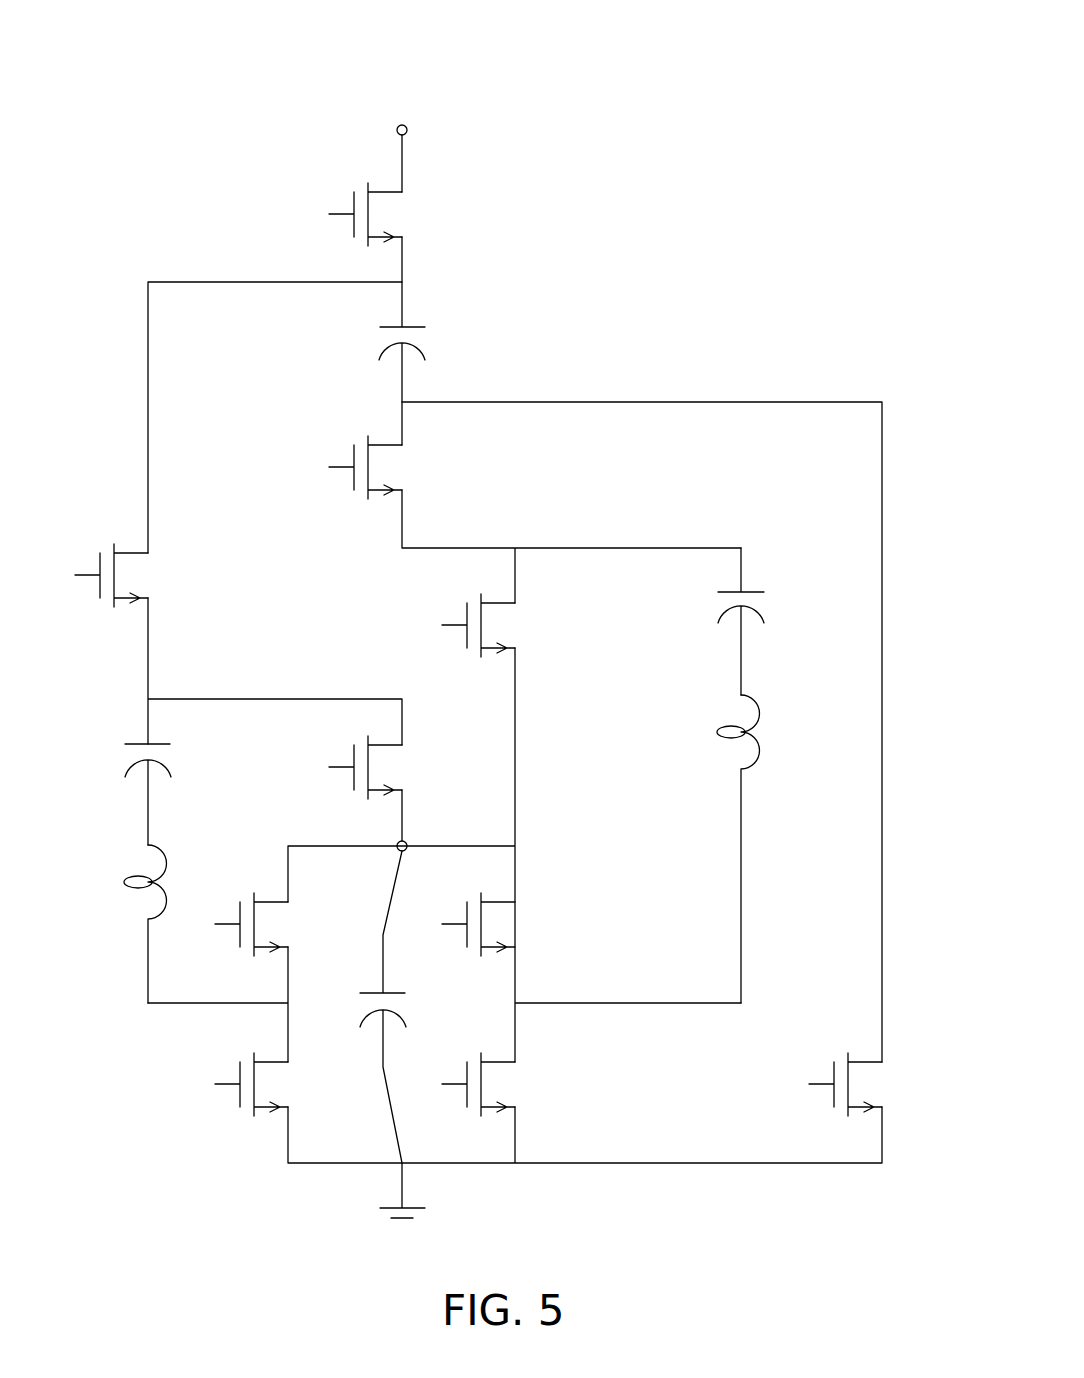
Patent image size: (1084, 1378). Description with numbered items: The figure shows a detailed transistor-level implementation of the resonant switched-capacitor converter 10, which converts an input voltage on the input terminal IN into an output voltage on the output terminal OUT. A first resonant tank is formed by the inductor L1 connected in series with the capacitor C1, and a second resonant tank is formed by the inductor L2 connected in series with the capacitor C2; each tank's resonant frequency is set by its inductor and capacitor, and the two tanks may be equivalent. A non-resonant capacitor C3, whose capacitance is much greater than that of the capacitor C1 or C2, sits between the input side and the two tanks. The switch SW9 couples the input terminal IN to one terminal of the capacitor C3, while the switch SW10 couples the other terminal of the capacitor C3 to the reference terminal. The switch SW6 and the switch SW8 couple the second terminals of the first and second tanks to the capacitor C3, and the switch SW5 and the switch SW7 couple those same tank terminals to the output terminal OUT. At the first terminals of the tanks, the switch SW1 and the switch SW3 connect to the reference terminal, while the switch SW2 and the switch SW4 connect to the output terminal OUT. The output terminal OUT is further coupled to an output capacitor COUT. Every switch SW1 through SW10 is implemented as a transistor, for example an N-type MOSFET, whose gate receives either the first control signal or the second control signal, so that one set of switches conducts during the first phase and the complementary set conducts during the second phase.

The resonant switched-capacitor converter 10 is at (792, 68).
The input terminal IN is at (406, 126).
The output terminal OUT is at (398, 851).
The switch SW1 is at (267, 1084).
The switch SW2 is at (267, 924).
The switch SW3 is at (494, 1084).
The switch SW4 is at (494, 924).
The switch SW5 is at (381, 767).
The switch SW6 is at (127, 575).
The switch SW7 is at (494, 625).
The switch SW8 is at (381, 467).
The switch SW9 is at (381, 214).
The switch SW10 is at (869, 1084).
The capacitor C1 is at (129, 794).
The capacitor C2 is at (723, 621).
The capacitor C3 is at (422, 341).
The output capacitor COUT is at (421, 1007).
The inductor L1 is at (127, 924).
The inductor L2 is at (721, 849).